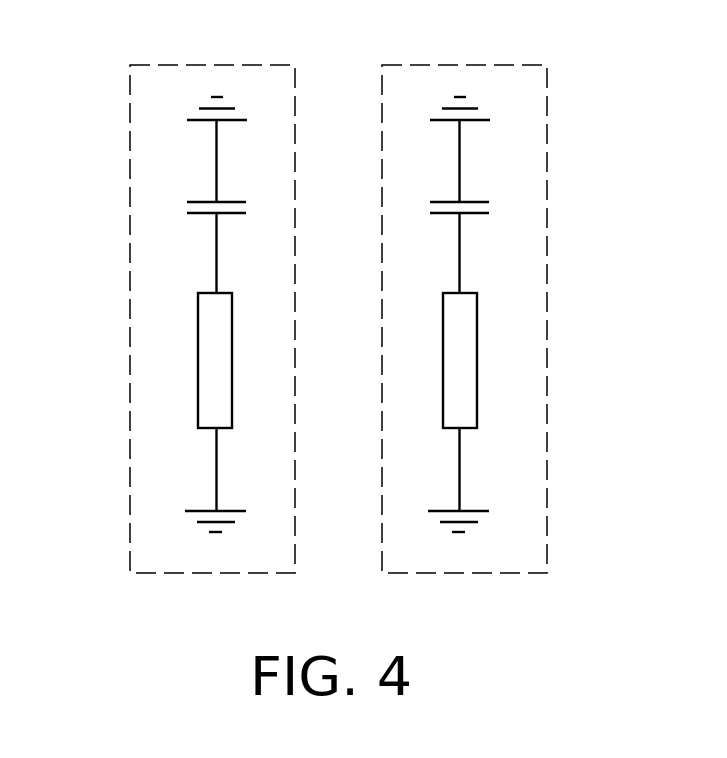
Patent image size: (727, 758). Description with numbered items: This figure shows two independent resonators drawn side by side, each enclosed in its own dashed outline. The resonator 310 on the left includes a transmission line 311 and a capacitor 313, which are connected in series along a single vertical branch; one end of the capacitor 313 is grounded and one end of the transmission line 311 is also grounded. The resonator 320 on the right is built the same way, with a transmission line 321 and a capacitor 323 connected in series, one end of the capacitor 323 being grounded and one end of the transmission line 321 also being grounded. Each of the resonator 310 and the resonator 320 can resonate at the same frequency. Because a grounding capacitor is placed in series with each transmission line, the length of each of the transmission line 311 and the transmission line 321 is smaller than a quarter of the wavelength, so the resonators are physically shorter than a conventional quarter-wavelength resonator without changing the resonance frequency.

The resonator 310 is at (130, 65).
The transmission line 311 is at (198, 360).
The capacitor 313 is at (203, 214).
The resonator 320 is at (547, 65).
The transmission line 321 is at (477, 360).
The capacitor 323 is at (474, 214).